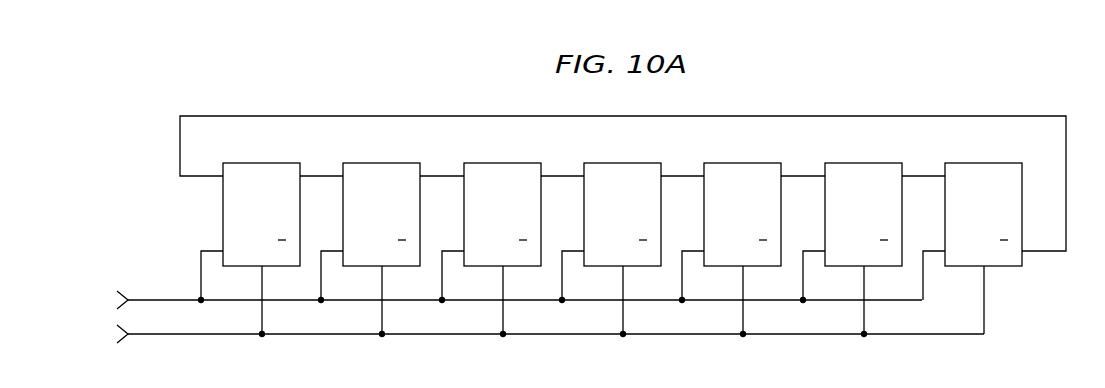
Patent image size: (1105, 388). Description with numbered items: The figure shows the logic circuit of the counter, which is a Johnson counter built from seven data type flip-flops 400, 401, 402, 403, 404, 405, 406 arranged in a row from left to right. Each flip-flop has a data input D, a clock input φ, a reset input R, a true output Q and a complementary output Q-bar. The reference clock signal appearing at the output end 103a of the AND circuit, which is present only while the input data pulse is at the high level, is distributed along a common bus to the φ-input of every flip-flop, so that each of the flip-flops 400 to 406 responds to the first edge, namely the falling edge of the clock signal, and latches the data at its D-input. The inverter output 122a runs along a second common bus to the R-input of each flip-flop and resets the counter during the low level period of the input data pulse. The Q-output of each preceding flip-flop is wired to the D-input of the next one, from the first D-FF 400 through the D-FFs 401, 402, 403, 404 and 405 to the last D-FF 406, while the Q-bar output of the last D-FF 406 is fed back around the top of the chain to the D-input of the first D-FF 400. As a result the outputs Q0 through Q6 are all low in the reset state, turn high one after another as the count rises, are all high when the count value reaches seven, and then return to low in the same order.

The output end of the AND circuit 103a is at (498, 301).
The output of the inverter 122a is at (529, 335).
The first D-FF 400 is at (253, 150).
The D-FF 401 is at (373, 150).
The D-FF 402 is at (494, 150).
The D-FF 403 is at (614, 150).
The D-FF 404 is at (734, 150).
The D-FF 405 is at (855, 150).
The last D-FF 406 is at (975, 150).